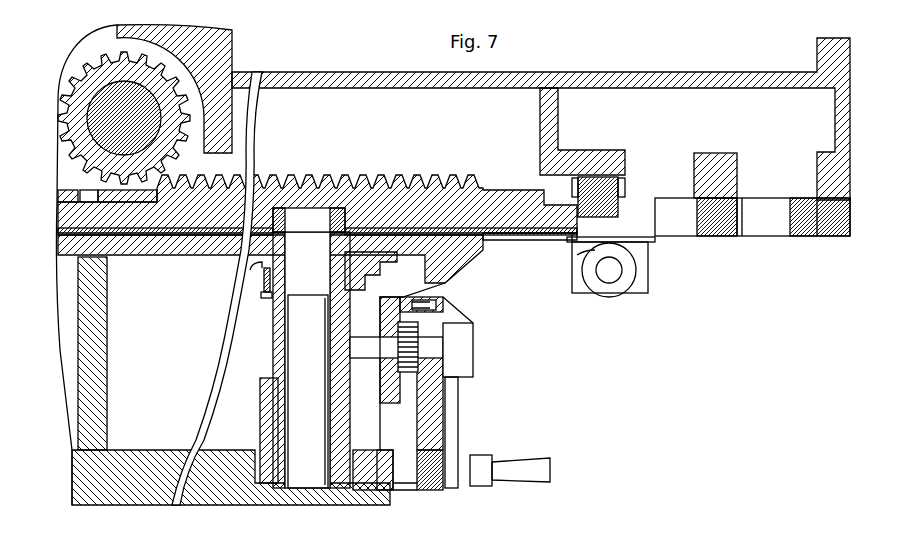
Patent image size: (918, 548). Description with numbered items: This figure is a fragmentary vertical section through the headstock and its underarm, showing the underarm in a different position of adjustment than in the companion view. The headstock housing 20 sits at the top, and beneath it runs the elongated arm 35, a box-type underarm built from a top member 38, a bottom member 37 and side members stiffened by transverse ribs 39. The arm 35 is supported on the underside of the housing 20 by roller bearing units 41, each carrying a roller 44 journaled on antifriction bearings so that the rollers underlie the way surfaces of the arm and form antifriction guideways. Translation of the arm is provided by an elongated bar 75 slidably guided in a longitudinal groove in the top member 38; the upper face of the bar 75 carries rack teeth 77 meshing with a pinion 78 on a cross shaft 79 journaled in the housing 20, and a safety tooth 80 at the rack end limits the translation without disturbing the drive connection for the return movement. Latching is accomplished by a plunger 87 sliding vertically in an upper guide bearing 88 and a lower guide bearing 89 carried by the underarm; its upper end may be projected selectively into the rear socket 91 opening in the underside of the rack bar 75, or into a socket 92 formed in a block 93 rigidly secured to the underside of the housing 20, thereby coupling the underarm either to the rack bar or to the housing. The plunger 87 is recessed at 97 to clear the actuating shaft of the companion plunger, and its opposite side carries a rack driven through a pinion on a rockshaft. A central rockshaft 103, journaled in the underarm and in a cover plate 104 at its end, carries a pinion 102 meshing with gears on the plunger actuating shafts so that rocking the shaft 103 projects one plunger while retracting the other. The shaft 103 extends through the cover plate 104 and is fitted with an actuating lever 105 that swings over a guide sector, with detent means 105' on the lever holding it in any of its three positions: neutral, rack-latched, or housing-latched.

The housing 20 is at (679, 66).
The pinion 78 is at (91, 68).
The cross shaft 79 is at (172, 143).
The bar 75 is at (372, 186).
The rack teeth 77 is at (400, 178).
The safety tooth 80 is at (160, 209).
The socket 91 is at (354, 224).
The top member 38 is at (166, 257).
The transverse ribs 39 is at (107, 306).
The arm 35 is at (141, 505).
The bottom member 37 is at (176, 500).
The lower guide bearing 89 is at (260, 402).
The plunger 87 is at (282, 316).
The recess 97 is at (296, 331).
The upper guide bearing 88 is at (262, 290).
The rockshaft 103 is at (432, 348).
The pinion 102 is at (408, 372).
The actuating lever 105 is at (452, 434).
The detent means 105' is at (489, 484).
The cover plate 104 is at (400, 490).
The roller bearing unit 41 is at (652, 284).
The roller 44 is at (609, 297).
The socket 92 is at (786, 237).
The block 93 is at (815, 237).